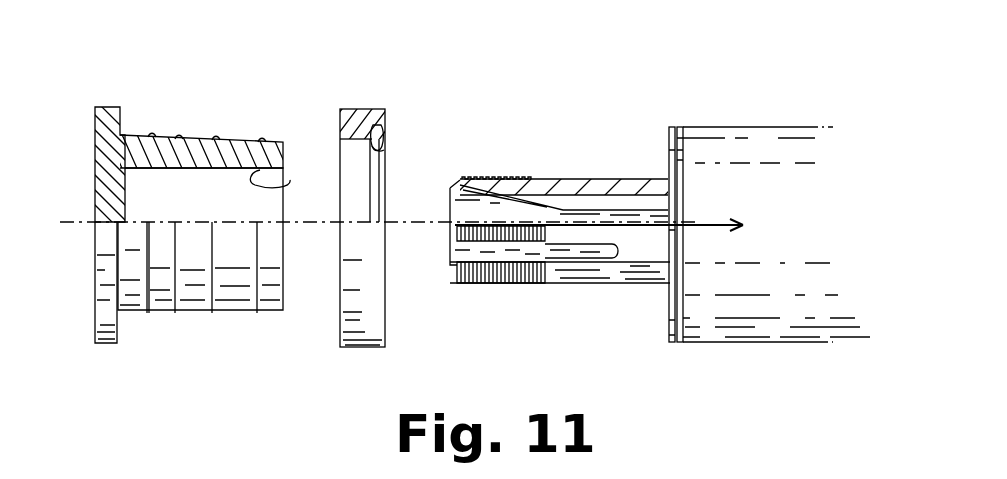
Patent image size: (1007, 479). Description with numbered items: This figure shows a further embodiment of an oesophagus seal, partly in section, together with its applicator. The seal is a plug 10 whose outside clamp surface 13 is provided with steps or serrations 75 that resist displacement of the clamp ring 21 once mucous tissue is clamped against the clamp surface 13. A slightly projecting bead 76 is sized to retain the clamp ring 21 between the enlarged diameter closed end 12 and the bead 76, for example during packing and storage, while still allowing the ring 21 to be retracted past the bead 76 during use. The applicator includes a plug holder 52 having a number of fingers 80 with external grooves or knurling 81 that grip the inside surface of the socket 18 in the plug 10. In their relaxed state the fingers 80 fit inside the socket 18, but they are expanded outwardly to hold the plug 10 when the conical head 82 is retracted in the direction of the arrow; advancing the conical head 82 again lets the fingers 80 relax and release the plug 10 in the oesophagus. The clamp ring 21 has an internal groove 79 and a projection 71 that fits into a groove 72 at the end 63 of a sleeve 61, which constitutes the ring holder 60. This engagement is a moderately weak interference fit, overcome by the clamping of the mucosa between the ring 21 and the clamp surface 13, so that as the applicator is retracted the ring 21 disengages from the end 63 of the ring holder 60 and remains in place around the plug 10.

The plug 10 is at (90, 125).
The enlarged diameter closed end 12 is at (97, 298).
The clamp surface 13 is at (253, 328).
The socket 18 is at (290, 180).
The clamp ring 21 is at (368, 360).
The plug holder 52 is at (513, 308).
The ring holder 60 is at (683, 352).
The sleeve 61 is at (785, 310).
The end of sleeve 63 is at (668, 152).
The projection 71 is at (385, 128).
The groove 72 is at (680, 127).
The steps or serrations 75 is at (253, 136).
The bead 76 is at (147, 315).
The internal groove 79 is at (384, 150).
The fingers 80 is at (448, 268).
The knurling 81 is at (527, 178).
The conical head 82 is at (488, 215).